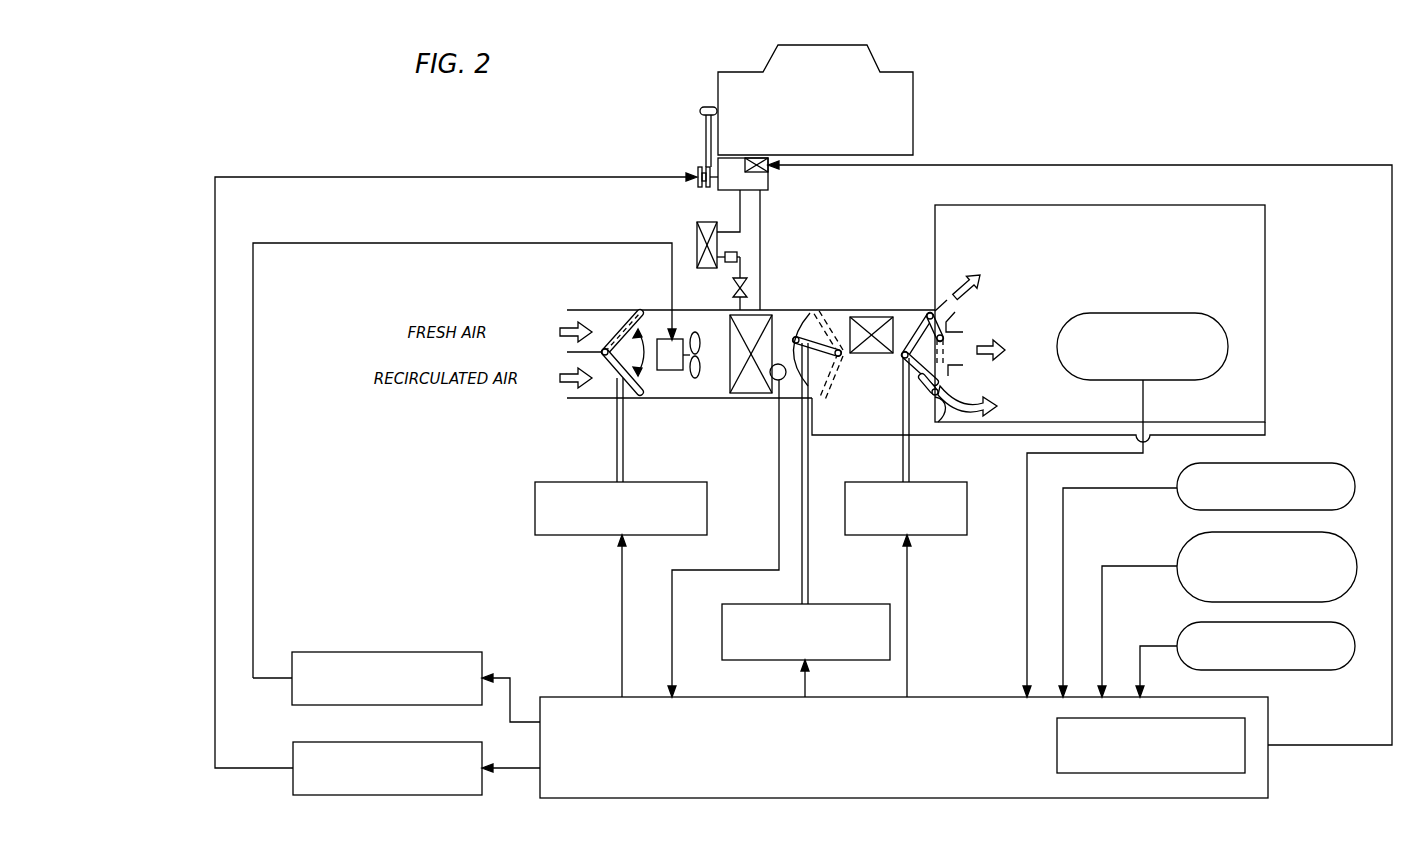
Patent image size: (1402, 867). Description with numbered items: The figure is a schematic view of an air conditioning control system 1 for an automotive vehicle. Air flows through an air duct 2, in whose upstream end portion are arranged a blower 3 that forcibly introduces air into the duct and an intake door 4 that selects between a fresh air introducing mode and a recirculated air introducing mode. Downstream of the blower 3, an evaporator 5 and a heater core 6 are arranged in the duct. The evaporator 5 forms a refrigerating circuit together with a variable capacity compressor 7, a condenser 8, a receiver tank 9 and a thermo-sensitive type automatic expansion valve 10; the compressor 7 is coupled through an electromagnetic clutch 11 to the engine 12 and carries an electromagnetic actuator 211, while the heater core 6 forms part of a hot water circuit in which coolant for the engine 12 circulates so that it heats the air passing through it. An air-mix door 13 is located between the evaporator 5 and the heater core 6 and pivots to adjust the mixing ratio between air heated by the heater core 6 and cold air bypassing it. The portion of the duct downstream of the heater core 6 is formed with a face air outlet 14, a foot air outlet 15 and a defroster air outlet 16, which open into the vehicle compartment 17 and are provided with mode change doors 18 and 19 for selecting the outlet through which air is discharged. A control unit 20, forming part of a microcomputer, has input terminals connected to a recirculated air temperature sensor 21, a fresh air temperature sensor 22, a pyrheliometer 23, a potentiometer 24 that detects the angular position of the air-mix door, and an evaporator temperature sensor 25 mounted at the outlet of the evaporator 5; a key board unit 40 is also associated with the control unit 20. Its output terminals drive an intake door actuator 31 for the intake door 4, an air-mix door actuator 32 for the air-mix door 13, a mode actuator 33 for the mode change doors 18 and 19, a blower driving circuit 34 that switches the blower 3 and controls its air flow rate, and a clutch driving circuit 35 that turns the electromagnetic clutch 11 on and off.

The automotive air conditioning system 1 is at (1142, 124).
The air duct 2 is at (608, 310).
The blower 3 is at (670, 370).
The intake door 4 is at (610, 382).
The evaporator 5 is at (750, 383).
The heater core 6 is at (863, 317).
The variable capacity compressor 7 is at (757, 185).
The condenser 8 is at (720, 243).
The receiver tank 9 is at (737, 257).
The thermo-sensitive type automatic expansion valve 10 is at (747, 290).
The electromagnetic clutch 11 is at (690, 162).
The engine 12 is at (913, 95).
The air-mix door 13 is at (806, 312).
The face air outlet 14 is at (963, 340).
The foot air outlet 15 is at (965, 388).
The defroster air outlet 16 is at (962, 302).
The compartment 17 is at (1265, 330).
The mode change door 18 is at (933, 312).
The mode change door 19 is at (938, 414).
The control unit 20 is at (1285, 710).
The recirculated air temperature sensor 21 is at (1170, 313).
The fresh air temperature sensor 22 is at (1182, 542).
The pyrheliometer 23 is at (1182, 622).
The potentiometer 24 is at (1300, 463).
The evaporator temperature sensor 25 is at (778, 363).
The intake door actuator 31 is at (665, 482).
The air-mix door actuator 32 is at (835, 604).
The mode actuator 33 is at (955, 482).
The blower driving circuit 34 is at (395, 652).
The clutch driving circuit 35 is at (395, 742).
The key board unit 40 is at (1248, 760).
The electromagnetic actuator 211 is at (768, 180).